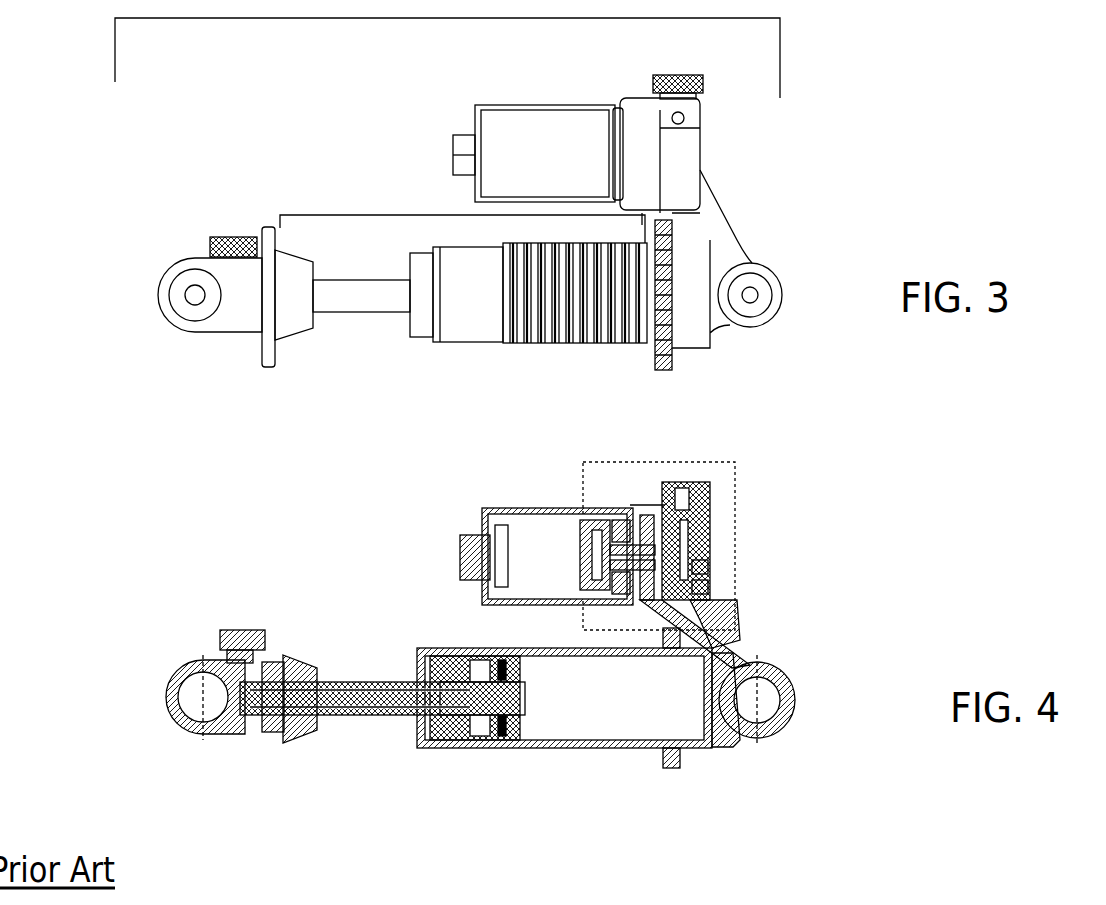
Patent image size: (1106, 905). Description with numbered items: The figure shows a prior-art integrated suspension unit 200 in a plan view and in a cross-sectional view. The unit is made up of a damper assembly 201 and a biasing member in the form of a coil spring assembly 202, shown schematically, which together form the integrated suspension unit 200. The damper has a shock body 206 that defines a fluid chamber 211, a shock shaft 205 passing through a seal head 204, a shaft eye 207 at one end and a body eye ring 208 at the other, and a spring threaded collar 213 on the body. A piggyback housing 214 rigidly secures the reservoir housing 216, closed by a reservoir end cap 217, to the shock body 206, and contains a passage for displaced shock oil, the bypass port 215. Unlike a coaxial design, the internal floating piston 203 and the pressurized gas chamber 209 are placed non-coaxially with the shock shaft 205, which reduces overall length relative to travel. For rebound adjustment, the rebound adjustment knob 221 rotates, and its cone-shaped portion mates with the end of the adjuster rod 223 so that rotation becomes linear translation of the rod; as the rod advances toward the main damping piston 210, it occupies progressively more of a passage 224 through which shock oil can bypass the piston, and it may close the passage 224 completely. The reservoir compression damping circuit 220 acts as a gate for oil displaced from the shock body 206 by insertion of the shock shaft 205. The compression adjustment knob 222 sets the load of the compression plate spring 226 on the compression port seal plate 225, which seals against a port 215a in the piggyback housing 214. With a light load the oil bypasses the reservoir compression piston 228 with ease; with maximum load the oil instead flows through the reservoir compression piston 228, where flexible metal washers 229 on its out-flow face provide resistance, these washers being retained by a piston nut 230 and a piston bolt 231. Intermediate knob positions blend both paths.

In FIG. 3, the integrated suspension unit 200 is at (340, 22).
In FIG. 3, the damper assembly 201 is at (802, 250).
In FIG. 3, the coil spring assembly 202 is at (322, 213).
In FIG. 4, the internal floating piston 203 is at (583, 575).
In FIG. 3, the seal head 204 is at (418, 340).
In FIG. 3, the shock shaft 205 is at (342, 315).
In FIG. 3, the shock body 206 is at (487, 348).
In FIG. 3, the shaft eye 207 is at (168, 262).
In FIG. 3, the body eye ring 208 is at (768, 335).
In FIG. 4, the pressurized gas chamber 209 is at (528, 538).
In FIG. 4, the main damping piston 210 is at (518, 730).
In FIG. 4, the fluid chamber 211 is at (615, 708).
In FIG. 3, the spring threaded collar 213 is at (676, 372).
In FIG. 3, the piggyback housing 214 is at (705, 170).
In FIG. 4, the bypass port 215 is at (792, 680).
In FIG. 4, the port 215a is at (690, 607).
In FIG. 3, the reservoir housing 216 is at (535, 104).
In FIG. 3, the reservoir end cap 217 is at (450, 152).
In FIG. 4, the reservoir compression damping circuit 220 is at (742, 518).
In FIG. 4, the rebound adjustment knob 221 is at (218, 628).
In FIG. 4, the compression adjustment knob 222 is at (715, 480).
In FIG. 4, the adjuster rod 223 is at (353, 686).
In FIG. 4, the passage 224 is at (478, 750).
In FIG. 4, the compression port seal plate 225 is at (700, 588).
In FIG. 4, the compression plate spring 226 is at (700, 570).
In FIG. 4, the reservoir compression piston 228 is at (727, 740).
In FIG. 4, the flexible metal washers 229 is at (667, 517).
In FIG. 4, the piston nut 230 is at (640, 545).
In FIG. 4, the piston bolt 231 is at (620, 532).